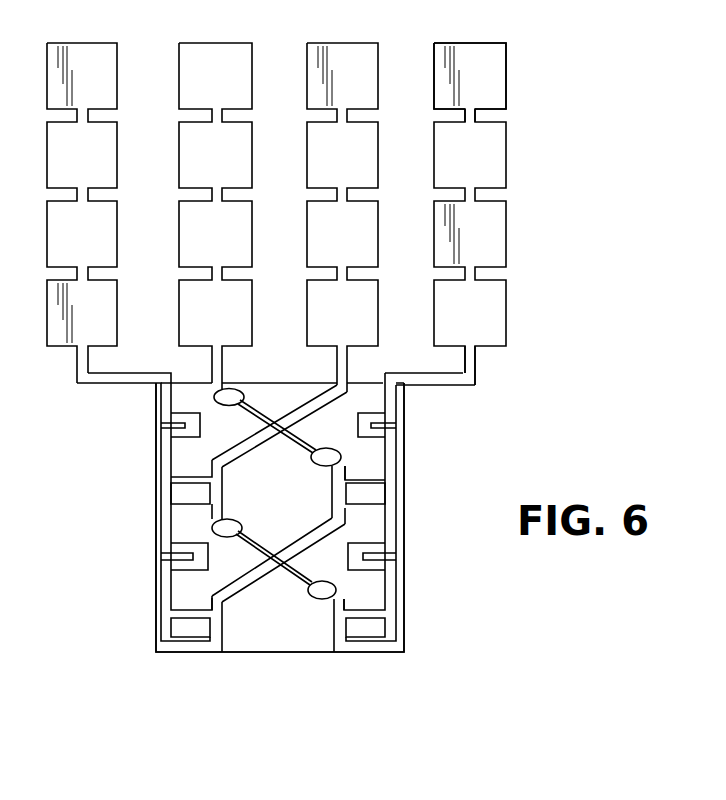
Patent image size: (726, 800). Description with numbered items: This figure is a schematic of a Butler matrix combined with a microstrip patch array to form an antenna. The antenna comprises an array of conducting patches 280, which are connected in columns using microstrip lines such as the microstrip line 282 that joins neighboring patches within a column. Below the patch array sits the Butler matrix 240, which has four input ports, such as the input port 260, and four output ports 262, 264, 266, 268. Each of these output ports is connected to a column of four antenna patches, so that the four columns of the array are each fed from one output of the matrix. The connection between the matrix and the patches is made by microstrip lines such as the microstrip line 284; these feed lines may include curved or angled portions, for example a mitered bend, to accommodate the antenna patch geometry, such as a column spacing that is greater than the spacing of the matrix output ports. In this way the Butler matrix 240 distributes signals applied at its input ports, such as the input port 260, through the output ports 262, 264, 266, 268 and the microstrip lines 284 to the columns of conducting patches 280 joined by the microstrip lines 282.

The Butler matrix 240 is at (406, 563).
The input port 260 is at (165, 653).
The output port 262 is at (165, 398).
The output port 264 is at (225, 367).
The output port 266 is at (338, 367).
The output port 268 is at (395, 397).
The conducting patch 280 is at (482, 76).
The microstrip line 282 is at (477, 115).
The microstrip line 284 is at (468, 362).